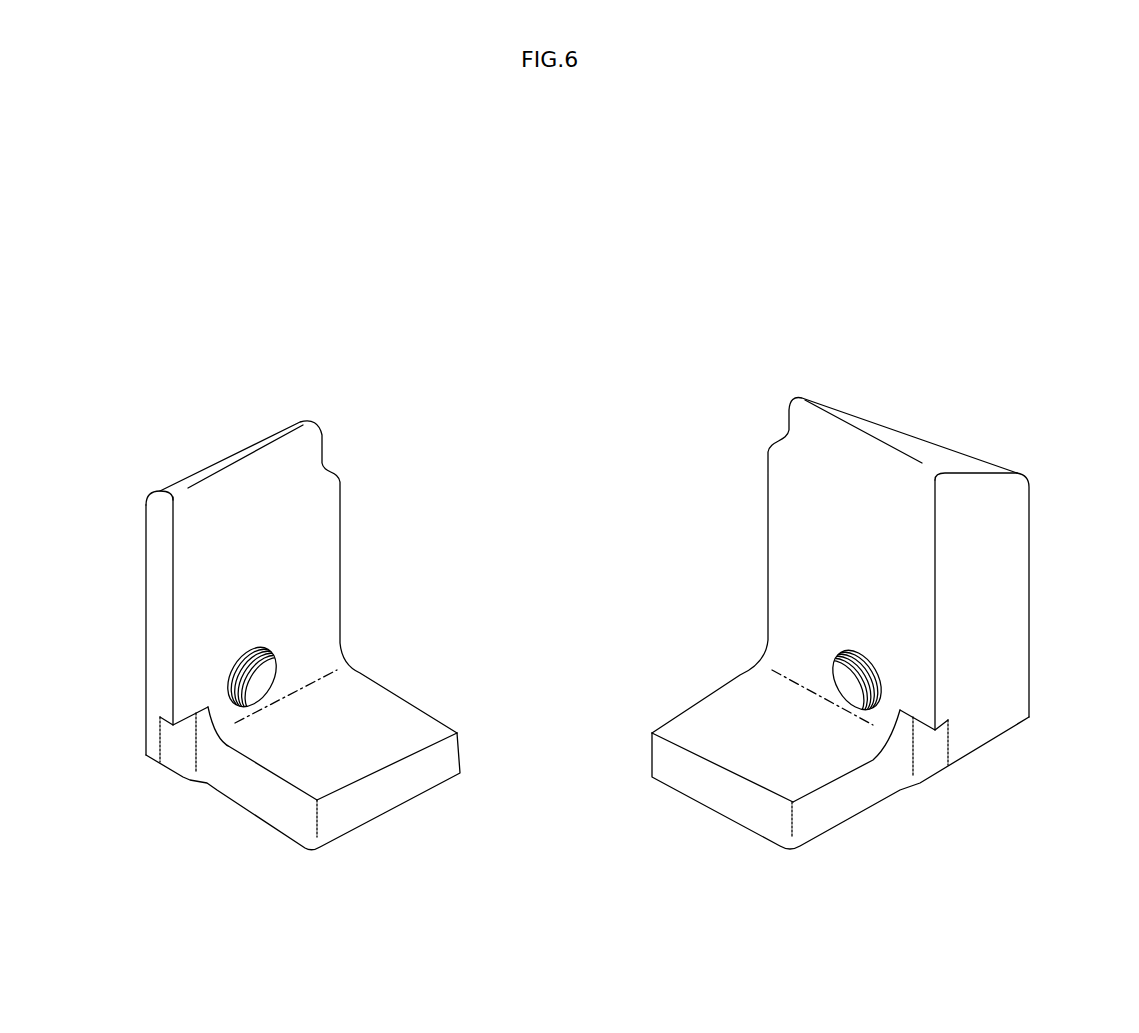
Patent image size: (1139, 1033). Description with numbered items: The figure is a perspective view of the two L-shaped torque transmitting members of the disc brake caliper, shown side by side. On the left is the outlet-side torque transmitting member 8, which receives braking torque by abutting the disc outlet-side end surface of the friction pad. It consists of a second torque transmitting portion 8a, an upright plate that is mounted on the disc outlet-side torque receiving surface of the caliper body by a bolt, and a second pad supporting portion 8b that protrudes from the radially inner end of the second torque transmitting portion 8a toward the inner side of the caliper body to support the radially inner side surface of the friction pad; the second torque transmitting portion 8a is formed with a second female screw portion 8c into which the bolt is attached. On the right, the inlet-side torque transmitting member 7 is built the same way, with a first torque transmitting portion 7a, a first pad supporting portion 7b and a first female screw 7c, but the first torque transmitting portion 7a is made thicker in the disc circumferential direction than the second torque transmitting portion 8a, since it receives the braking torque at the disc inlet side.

The inlet-side torque transmitting member 7 is at (896, 392).
The first torque transmitting portion 7a is at (1003, 557).
The first pad supporting portion 7b is at (715, 720).
The first female screw 7c is at (850, 678).
The outlet-side torque transmitting member 8 is at (244, 425).
The second torque transmitting portion 8a is at (160, 599).
The second pad supporting portion 8b is at (382, 710).
The second female screw portion 8c is at (262, 686).